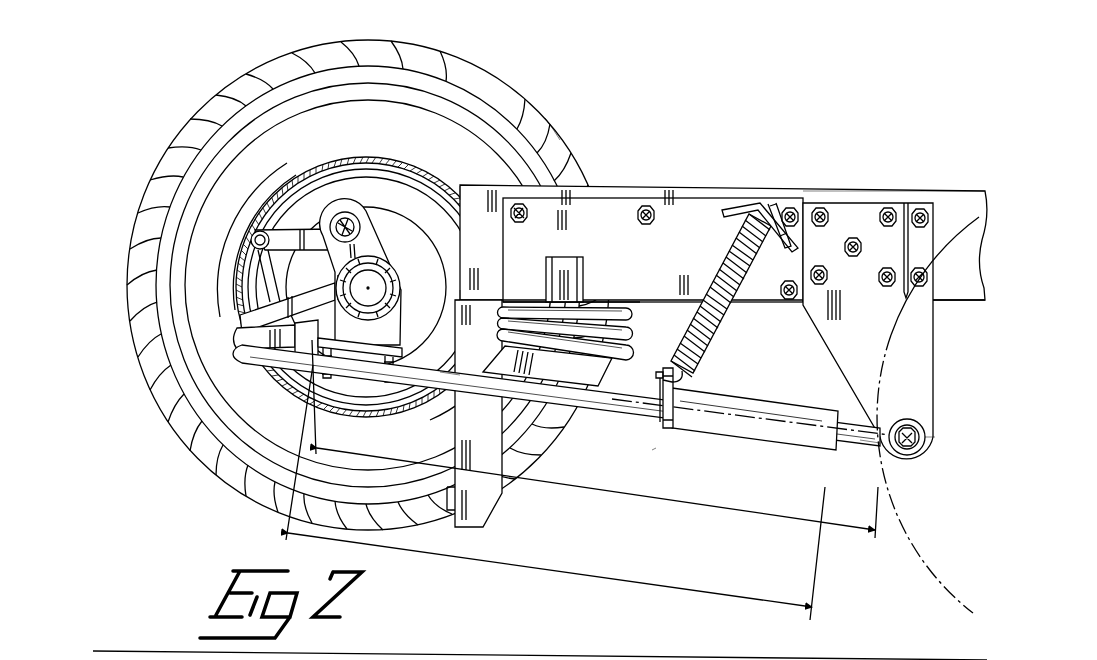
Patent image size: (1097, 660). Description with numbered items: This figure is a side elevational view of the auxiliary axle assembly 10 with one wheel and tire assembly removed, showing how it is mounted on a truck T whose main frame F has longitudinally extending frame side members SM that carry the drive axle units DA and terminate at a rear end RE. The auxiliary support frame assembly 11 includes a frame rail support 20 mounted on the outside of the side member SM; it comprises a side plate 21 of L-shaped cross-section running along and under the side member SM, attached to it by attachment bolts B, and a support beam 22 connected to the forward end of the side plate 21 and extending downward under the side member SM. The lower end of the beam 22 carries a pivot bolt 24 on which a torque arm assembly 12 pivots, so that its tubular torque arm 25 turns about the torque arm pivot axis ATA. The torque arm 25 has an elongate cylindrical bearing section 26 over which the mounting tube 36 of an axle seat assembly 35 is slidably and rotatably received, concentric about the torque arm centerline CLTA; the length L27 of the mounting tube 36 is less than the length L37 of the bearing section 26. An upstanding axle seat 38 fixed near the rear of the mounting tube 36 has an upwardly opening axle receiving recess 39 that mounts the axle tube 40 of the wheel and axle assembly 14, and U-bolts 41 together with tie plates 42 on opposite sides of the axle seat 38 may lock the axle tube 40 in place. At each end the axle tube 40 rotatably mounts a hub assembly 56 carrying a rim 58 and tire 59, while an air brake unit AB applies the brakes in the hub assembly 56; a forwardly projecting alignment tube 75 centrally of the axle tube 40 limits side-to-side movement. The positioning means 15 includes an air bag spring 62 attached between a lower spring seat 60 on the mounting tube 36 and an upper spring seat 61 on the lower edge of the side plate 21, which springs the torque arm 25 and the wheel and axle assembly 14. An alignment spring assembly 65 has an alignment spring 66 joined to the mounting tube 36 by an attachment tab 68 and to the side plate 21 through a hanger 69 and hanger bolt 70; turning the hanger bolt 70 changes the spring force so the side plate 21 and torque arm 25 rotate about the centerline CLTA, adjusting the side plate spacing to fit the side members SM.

The auxiliary axle assembly 10 is at (652, 452).
The auxiliary support frame assembly 11 is at (832, 190).
The torque arm assembly 12 is at (745, 440).
The wheel and axle assembly 14 is at (215, 487).
The positioning means 15 is at (612, 301).
The frame rail support 20 is at (695, 208).
The side plate 21 is at (641, 266).
The support beam 22 is at (864, 334).
The pivot bolt 24 is at (906, 452).
The tubular torque arm 25 is at (868, 447).
The elongate cylindrical bearing section 26 is at (856, 433).
The axle seat assembly 35 is at (452, 384).
The mounting tube 36 is at (632, 405).
The axle seat 38 is at (376, 340).
The axle receiving recess 39 is at (414, 270).
The axle tube 40 is at (392, 270).
The U-bolt 41 is at (405, 302).
The tie plate 42 is at (375, 350).
The hub assembly 56 is at (406, 200).
The rim 58 is at (372, 174).
The tire 59 is at (538, 118).
The lower spring seat 60 is at (605, 372).
The upper spring seat 61 is at (526, 302).
The air bag spring 62 is at (630, 330).
The alignment spring assembly 65 is at (706, 349).
The alignment spring 66 is at (692, 370).
The attachment tab 68 is at (667, 428).
The hanger 69 is at (741, 203).
The hanger bolt 70 is at (785, 205).
The alignment tube 75 is at (455, 292).
The attachment bolt B is at (525, 216).
The truck T is at (807, 144).
The frame side member SM is at (965, 200).
The main frame F is at (967, 302).
The rear end RE is at (483, 152).
The air brake unit AB is at (249, 358).
The torque arm centerline CLTA is at (766, 412).
The torque arm pivot axis ATA is at (921, 432).
The drive axle unit DA is at (925, 571).
The length dimension L37 is at (595, 439).
The length dimension L27 is at (555, 492).